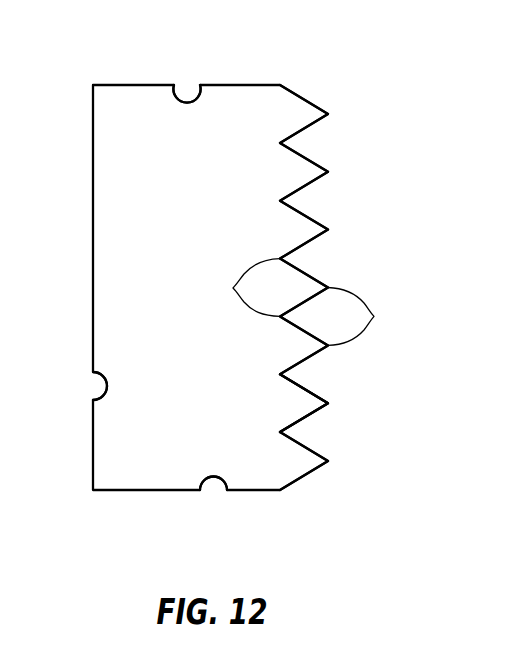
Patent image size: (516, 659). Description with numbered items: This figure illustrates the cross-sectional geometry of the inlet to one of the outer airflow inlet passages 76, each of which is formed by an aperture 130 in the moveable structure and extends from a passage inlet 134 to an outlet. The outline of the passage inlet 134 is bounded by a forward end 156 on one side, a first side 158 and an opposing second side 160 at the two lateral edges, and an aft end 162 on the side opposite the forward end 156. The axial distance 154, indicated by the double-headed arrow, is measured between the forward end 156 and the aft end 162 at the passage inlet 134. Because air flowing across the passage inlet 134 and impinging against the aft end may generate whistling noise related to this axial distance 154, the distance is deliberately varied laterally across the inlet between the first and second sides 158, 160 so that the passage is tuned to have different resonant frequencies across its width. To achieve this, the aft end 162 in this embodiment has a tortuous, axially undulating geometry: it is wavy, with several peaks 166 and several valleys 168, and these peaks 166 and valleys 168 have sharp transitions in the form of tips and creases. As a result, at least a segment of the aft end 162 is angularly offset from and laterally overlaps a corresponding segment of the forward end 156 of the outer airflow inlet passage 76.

The outer airflow inlet passage 76 is at (145, 365).
The aperture 130 is at (210, 287).
The passage inlet 134 is at (262, 115).
The axial distance 154 is at (317, 223).
The forward end 156 is at (93, 397).
The first side 158 is at (225, 492).
The second side 160 is at (176, 92).
The aft end 162 is at (279, 390).
The peak 166 is at (237, 288).
The valley 168 is at (373, 317).